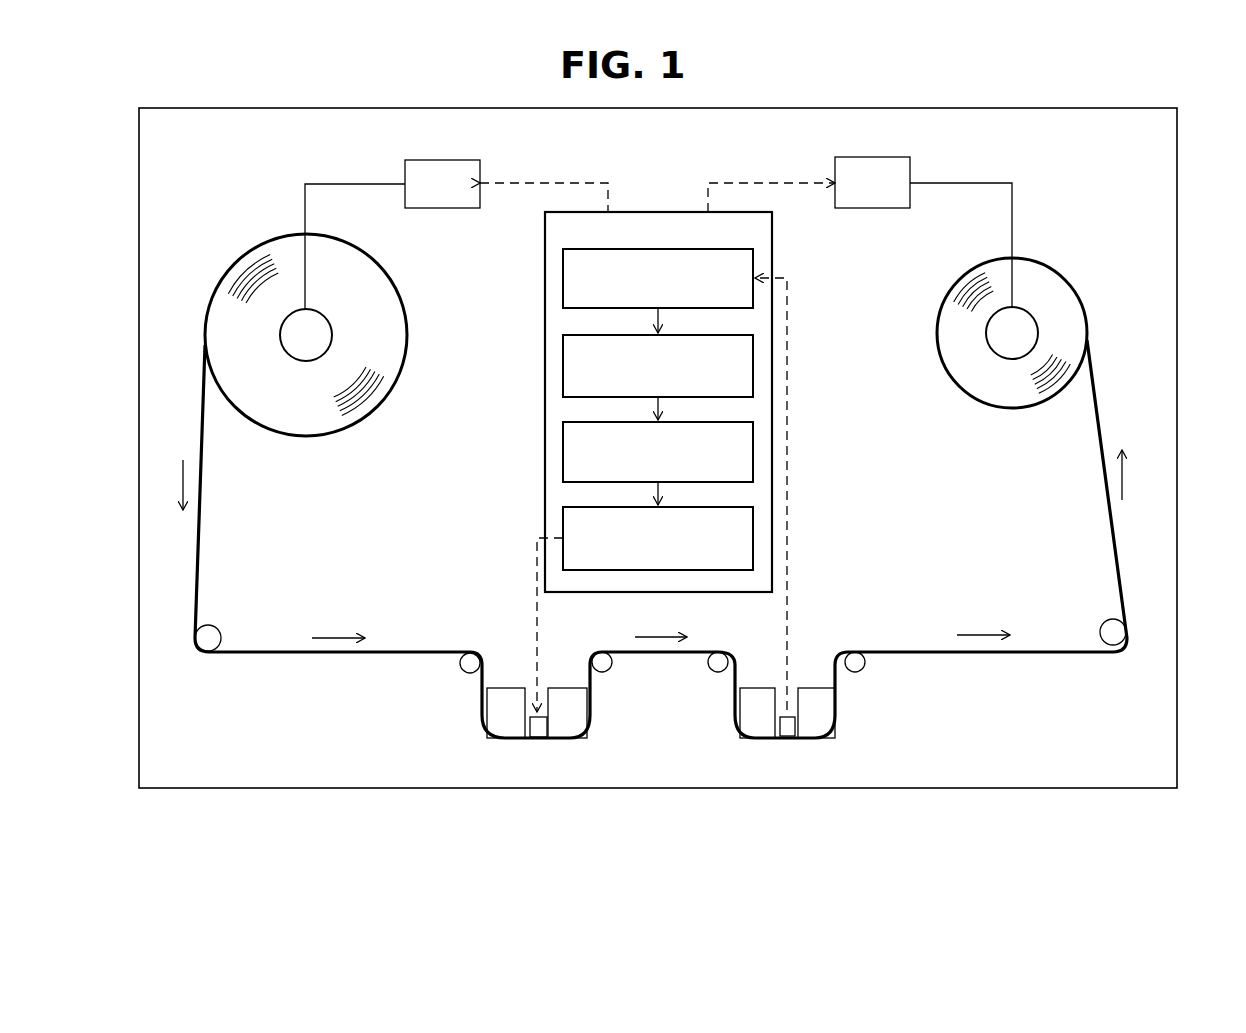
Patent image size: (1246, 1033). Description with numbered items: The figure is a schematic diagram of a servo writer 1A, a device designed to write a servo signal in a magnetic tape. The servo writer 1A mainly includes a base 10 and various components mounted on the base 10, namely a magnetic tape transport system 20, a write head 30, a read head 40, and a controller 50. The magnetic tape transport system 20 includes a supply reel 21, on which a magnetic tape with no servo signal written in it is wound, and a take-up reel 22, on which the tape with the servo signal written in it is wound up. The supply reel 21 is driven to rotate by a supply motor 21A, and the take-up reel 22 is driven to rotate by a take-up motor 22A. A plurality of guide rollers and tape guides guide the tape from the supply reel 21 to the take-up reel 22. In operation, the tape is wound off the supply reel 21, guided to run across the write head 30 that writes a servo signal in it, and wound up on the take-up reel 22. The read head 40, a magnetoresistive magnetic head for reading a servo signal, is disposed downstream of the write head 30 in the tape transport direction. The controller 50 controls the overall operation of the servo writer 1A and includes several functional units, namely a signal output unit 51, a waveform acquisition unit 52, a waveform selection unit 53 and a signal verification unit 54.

The servo writer 1A is at (970, 70).
The base 10 is at (731, 108).
The magnetic tape transport system 20 is at (1108, 259).
The supply reel 21 is at (328, 334).
The supply motor 21A is at (458, 209).
The take-up reel 22 is at (998, 332).
The take-up motor 22A is at (882, 209).
The write head 30 is at (537, 740).
The read head 40 is at (787, 737).
The controller 50 is at (665, 212).
The signal output unit 51 is at (705, 570).
The waveform acquisition unit 52 is at (563, 278).
The waveform selection unit 53 is at (563, 365).
The signal verification unit 54 is at (563, 453).